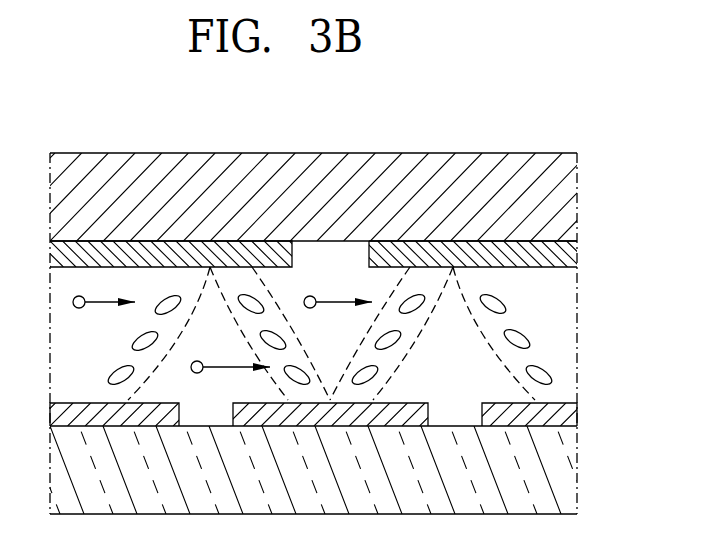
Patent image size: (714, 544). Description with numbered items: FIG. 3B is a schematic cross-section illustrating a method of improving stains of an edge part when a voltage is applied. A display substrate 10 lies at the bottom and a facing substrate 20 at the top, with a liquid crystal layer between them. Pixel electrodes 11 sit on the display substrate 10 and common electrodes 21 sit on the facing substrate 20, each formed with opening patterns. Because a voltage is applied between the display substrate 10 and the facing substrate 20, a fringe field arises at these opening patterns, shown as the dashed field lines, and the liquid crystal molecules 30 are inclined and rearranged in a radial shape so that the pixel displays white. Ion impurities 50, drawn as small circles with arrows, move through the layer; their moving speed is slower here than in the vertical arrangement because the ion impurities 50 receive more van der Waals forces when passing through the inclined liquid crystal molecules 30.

The display substrate 10 is at (563, 478).
The pixel electrodes 11 is at (570, 415).
The facing substrate 20 is at (563, 196).
The common electrodes 21 is at (563, 258).
The liquid crystal molecules 30 is at (551, 378).
The ion impurities 50 is at (311, 296).